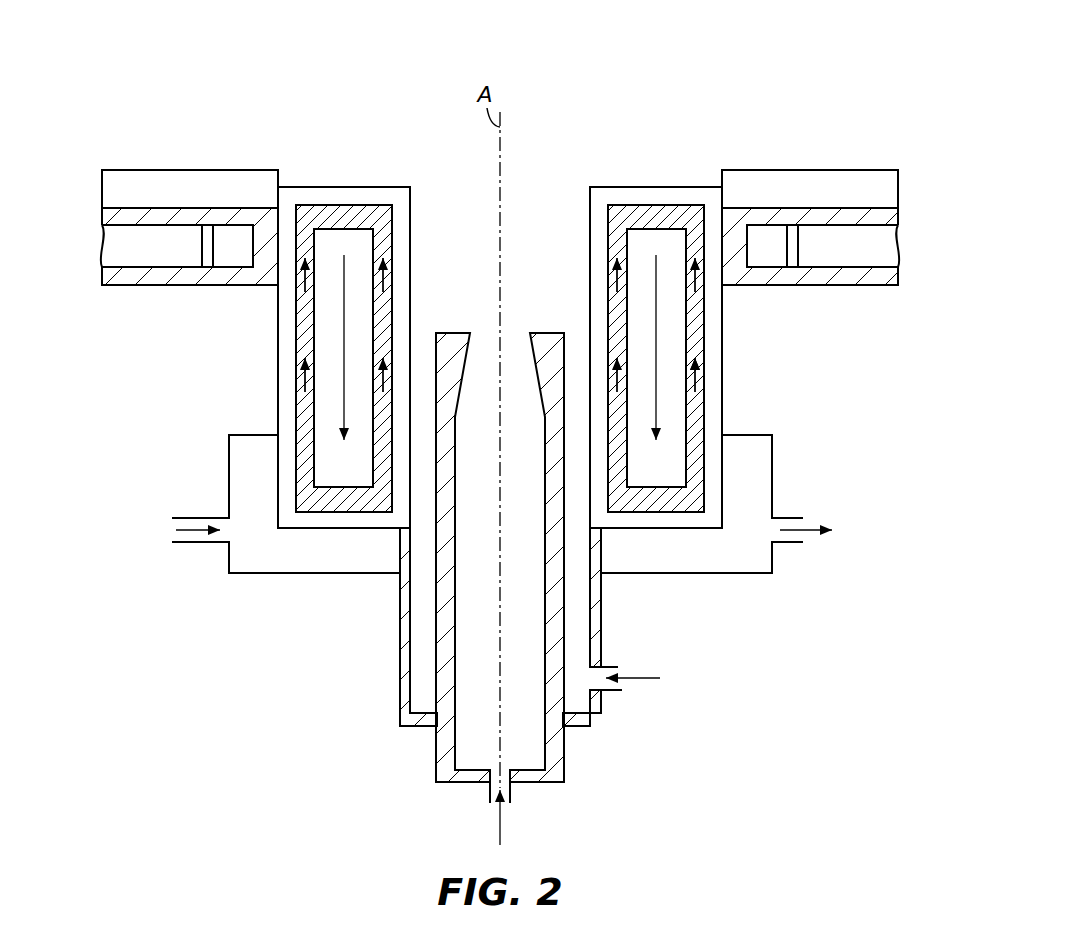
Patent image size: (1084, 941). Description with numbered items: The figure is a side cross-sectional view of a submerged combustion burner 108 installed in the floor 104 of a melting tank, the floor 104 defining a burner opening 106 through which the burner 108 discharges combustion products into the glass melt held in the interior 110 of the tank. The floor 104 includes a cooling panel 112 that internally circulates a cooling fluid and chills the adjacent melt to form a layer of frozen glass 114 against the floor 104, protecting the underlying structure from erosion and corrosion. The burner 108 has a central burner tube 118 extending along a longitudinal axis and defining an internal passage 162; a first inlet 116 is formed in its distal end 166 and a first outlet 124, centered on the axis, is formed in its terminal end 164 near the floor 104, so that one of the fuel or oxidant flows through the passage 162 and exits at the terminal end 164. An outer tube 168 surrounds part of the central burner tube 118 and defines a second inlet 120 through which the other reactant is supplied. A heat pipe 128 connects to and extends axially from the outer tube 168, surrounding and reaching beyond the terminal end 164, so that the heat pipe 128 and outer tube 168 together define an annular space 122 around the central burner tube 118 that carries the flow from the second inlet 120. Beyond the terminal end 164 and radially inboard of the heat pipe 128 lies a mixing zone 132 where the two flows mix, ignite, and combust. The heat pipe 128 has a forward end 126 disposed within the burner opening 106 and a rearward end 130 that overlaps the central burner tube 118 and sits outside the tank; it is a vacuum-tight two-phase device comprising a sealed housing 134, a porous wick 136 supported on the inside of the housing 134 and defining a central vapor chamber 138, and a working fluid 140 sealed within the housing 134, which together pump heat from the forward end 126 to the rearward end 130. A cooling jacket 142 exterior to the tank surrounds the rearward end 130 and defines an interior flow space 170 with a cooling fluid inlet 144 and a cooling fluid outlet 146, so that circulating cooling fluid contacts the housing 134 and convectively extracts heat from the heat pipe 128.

The floor 104 is at (100, 246).
The burner opening 106 is at (722, 184).
The submerged combustion burner 108 is at (380, 667).
The interior 110 is at (452, 21).
The cooling panel 112 is at (105, 280).
The layer of frozen glass 114 is at (188, 192).
The first inlet 116 is at (496, 784).
The central burner tube 118 is at (450, 657).
The second inlet 120 is at (605, 673).
The annular space 122 is at (400, 603).
The first outlet 124 is at (532, 333).
The forward end 126 is at (356, 187).
The heat pipe 128 is at (300, 186).
The rearward end 130 is at (290, 532).
The mixing zone 132 is at (518, 245).
The housing 134 is at (288, 377).
The wick 136 is at (305, 440).
The vapor chamber 138 is at (315, 448).
The working fluid 140 is at (298, 290).
The cooling jacket 142 is at (773, 461).
The cooling fluid inlet 144 is at (206, 544).
The cooling fluid outlet 146 is at (790, 543).
The internal passage 162 is at (472, 718).
The terminal end 164 is at (458, 333).
The distal end 166 is at (528, 783).
The outer tube 168 is at (404, 704).
The interior flow space 170 is at (318, 573).